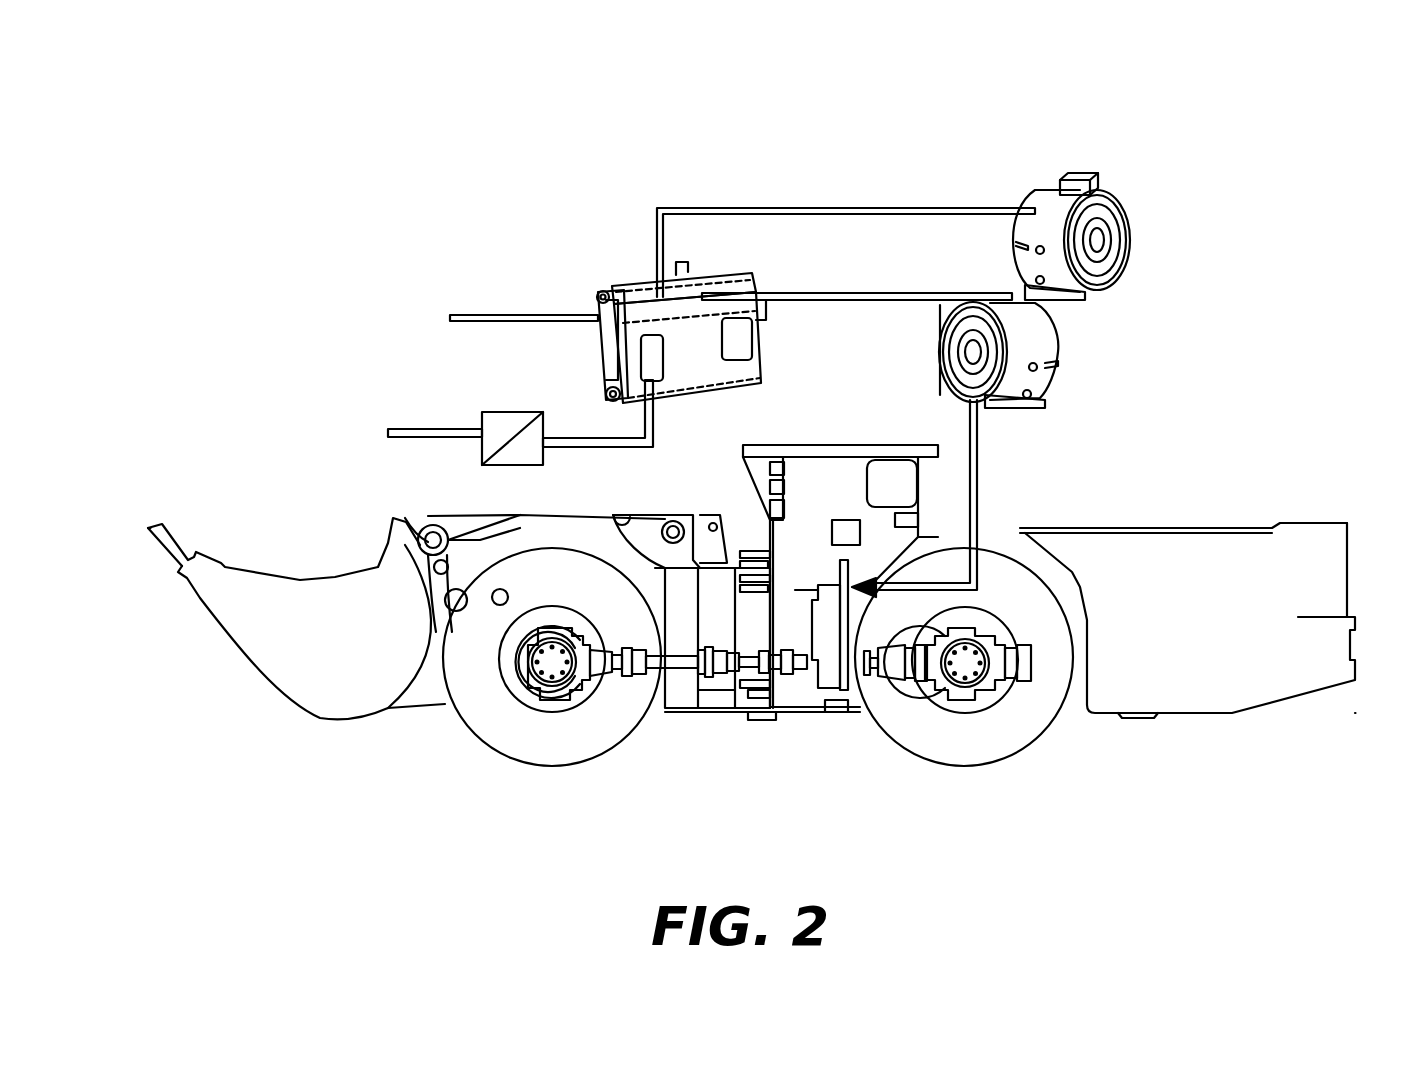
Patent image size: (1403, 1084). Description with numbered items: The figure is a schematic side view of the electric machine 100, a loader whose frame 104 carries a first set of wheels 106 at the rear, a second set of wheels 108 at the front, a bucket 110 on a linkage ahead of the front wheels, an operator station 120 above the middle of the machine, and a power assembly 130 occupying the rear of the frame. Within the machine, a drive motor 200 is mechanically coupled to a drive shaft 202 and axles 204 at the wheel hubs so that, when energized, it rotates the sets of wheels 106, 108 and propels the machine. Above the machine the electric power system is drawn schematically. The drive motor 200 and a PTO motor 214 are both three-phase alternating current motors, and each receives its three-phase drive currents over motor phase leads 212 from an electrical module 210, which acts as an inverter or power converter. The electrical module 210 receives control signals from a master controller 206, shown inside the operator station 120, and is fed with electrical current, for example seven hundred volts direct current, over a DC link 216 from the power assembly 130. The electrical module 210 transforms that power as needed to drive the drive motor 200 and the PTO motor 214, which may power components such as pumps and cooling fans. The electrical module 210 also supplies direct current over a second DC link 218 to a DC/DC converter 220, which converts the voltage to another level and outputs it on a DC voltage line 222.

The electric machine 100 is at (1172, 133).
The frame 104 is at (1140, 687).
The first set of wheels 106 is at (1040, 728).
The second set of wheels 108 is at (618, 718).
The bucket 110 is at (337, 690).
The operator station 120 is at (800, 440).
The power assembly 130 is at (1220, 527).
The drive motor 200 is at (1050, 350).
The drive shaft 202 is at (697, 690).
The axles 204 is at (540, 687).
The master controller 206 is at (852, 523).
The electrical module 210 is at (635, 287).
The motor phase leads 212 is at (995, 300).
The PTO motor 214 is at (1078, 298).
The DC link 216 is at (528, 316).
The DC link 218 is at (600, 438).
The DC/DC converter 220 is at (502, 418).
The DC voltage line 222 is at (423, 430).